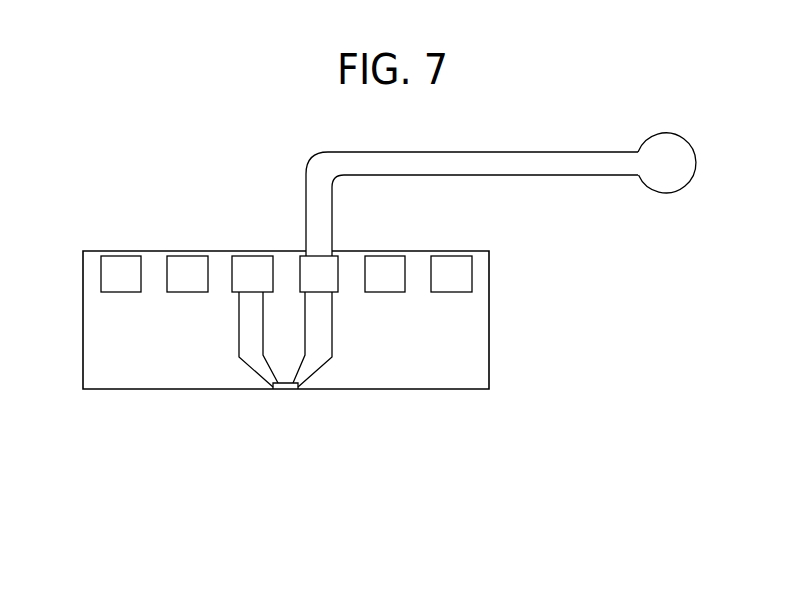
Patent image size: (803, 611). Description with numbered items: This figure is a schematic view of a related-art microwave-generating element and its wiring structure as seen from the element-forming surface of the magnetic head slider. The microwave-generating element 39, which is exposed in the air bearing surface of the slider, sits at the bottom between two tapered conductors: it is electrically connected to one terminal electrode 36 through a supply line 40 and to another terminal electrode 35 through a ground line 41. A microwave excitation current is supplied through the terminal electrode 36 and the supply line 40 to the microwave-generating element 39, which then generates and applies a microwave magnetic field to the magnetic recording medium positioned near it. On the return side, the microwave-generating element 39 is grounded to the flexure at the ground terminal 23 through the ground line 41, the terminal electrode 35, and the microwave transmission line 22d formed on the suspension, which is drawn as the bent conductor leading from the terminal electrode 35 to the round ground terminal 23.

The microwave transmission line 22d is at (538, 162).
The ground terminal 23 is at (663, 173).
The terminal electrode 35 is at (318, 273).
The terminal electrode 36 is at (252, 268).
The microwave-generating element 39 is at (287, 390).
The supply line 40 is at (245, 317).
The ground line 41 is at (320, 328).